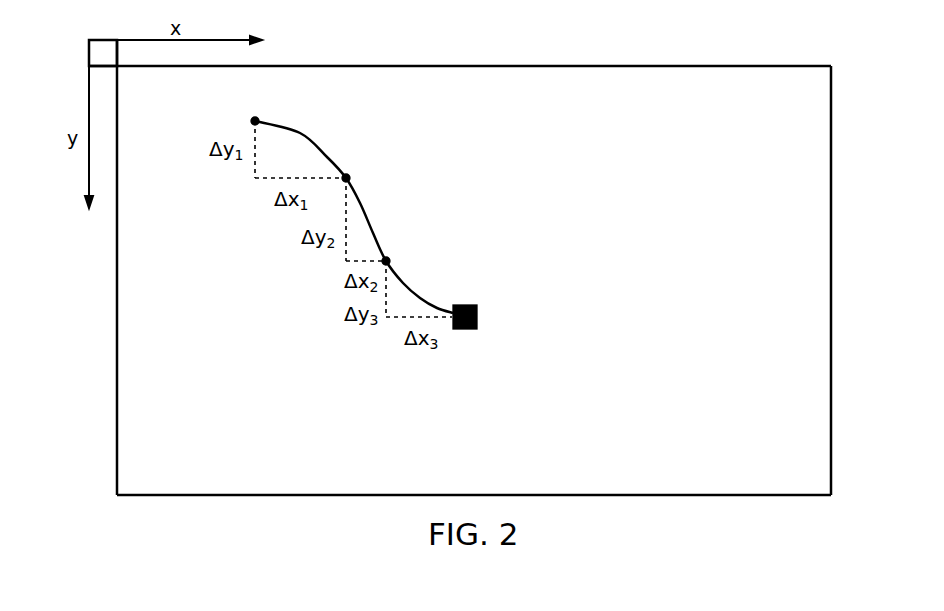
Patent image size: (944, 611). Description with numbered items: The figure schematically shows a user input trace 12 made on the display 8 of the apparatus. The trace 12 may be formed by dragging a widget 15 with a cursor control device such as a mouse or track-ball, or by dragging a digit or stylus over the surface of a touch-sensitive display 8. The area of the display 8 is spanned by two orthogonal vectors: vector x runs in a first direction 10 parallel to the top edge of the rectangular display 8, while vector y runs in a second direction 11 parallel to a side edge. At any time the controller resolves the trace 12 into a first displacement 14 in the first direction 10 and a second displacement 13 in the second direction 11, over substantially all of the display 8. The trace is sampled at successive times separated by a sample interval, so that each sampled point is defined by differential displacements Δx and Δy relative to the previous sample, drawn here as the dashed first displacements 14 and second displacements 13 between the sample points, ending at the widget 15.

The display 8 is at (673, 65).
The first direction 10 is at (146, 40).
The second direction 11 is at (88, 58).
The user input trace 12 is at (417, 292).
The second displacement 13 is at (256, 158).
The first displacement 14 is at (255, 178).
The widget 15 is at (477, 317).